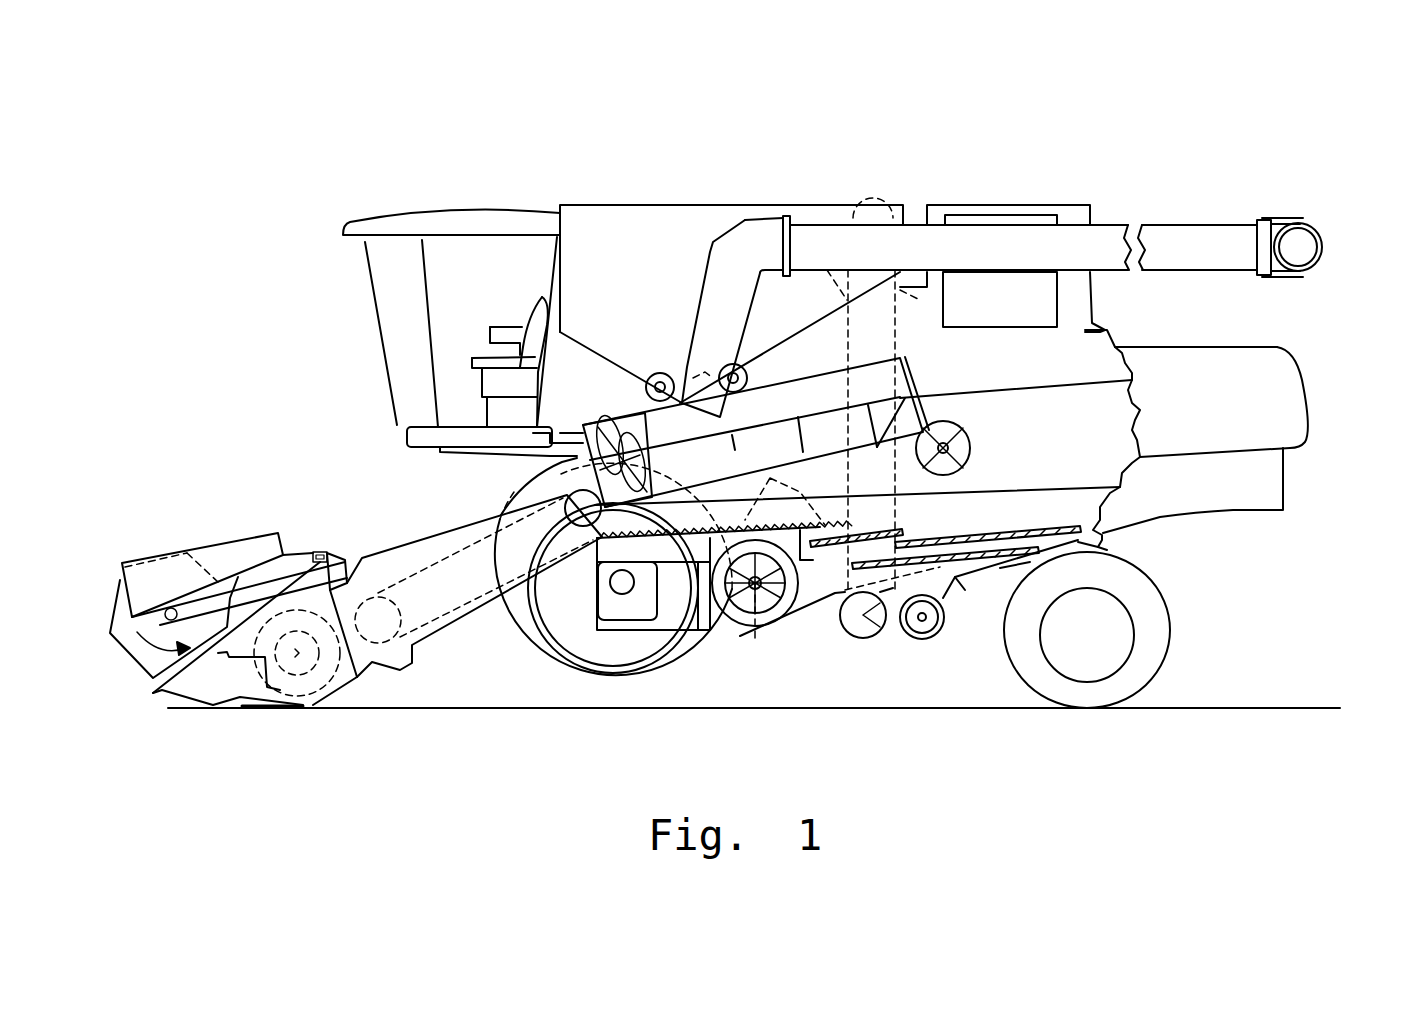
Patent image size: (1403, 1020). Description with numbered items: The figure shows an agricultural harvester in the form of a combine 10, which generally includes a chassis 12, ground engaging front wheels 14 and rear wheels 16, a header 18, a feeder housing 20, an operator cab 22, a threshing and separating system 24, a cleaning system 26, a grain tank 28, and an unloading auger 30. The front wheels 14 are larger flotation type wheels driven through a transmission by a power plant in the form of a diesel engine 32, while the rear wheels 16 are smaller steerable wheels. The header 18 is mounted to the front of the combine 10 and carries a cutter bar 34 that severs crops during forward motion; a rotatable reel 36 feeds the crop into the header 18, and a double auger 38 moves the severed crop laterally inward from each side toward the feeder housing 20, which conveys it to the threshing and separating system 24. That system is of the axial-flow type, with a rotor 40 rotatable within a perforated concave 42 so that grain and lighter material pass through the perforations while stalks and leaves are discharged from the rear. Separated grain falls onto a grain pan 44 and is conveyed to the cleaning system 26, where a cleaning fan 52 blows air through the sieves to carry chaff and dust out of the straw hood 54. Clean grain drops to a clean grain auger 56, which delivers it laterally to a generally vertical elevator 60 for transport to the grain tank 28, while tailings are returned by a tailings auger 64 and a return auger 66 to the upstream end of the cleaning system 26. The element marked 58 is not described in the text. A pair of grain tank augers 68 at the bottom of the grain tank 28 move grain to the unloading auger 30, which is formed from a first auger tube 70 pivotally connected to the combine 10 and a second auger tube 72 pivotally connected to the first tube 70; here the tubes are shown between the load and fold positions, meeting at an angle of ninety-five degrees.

The combine 10 is at (440, 192).
The chassis 12 is at (1100, 543).
The front wheels 14 is at (528, 663).
The rear wheels 16 is at (1165, 648).
The header 18 is at (207, 532).
The feeder housing 20 is at (420, 538).
The operator cab 22 is at (372, 308).
The threshing and separating system 24 is at (524, 472).
The cleaning system 26 is at (817, 636).
The grain tank 28 is at (613, 212).
The unloading auger 30 is at (1200, 212).
The diesel engine 32 is at (987, 217).
The cutter bar 34 is at (240, 698).
The rotatable reel 36 is at (117, 600).
The double auger 38 is at (300, 677).
The rotor 40 is at (613, 430).
The perforated concave 42 is at (793, 410).
The grain pan 44 is at (588, 556).
The cleaning fan 52 is at (748, 623).
The straw hood 54 is at (1293, 390).
The clean grain auger 56 is at (868, 627).
The sieve frame 58 is at (1028, 570).
The elevator 60 is at (893, 335).
The tailings auger 64 is at (923, 632).
The return auger 66 is at (838, 513).
The grain tank augers 68 is at (662, 373).
The first auger tube 70 is at (1170, 225).
The second auger tube 72 is at (1318, 230).